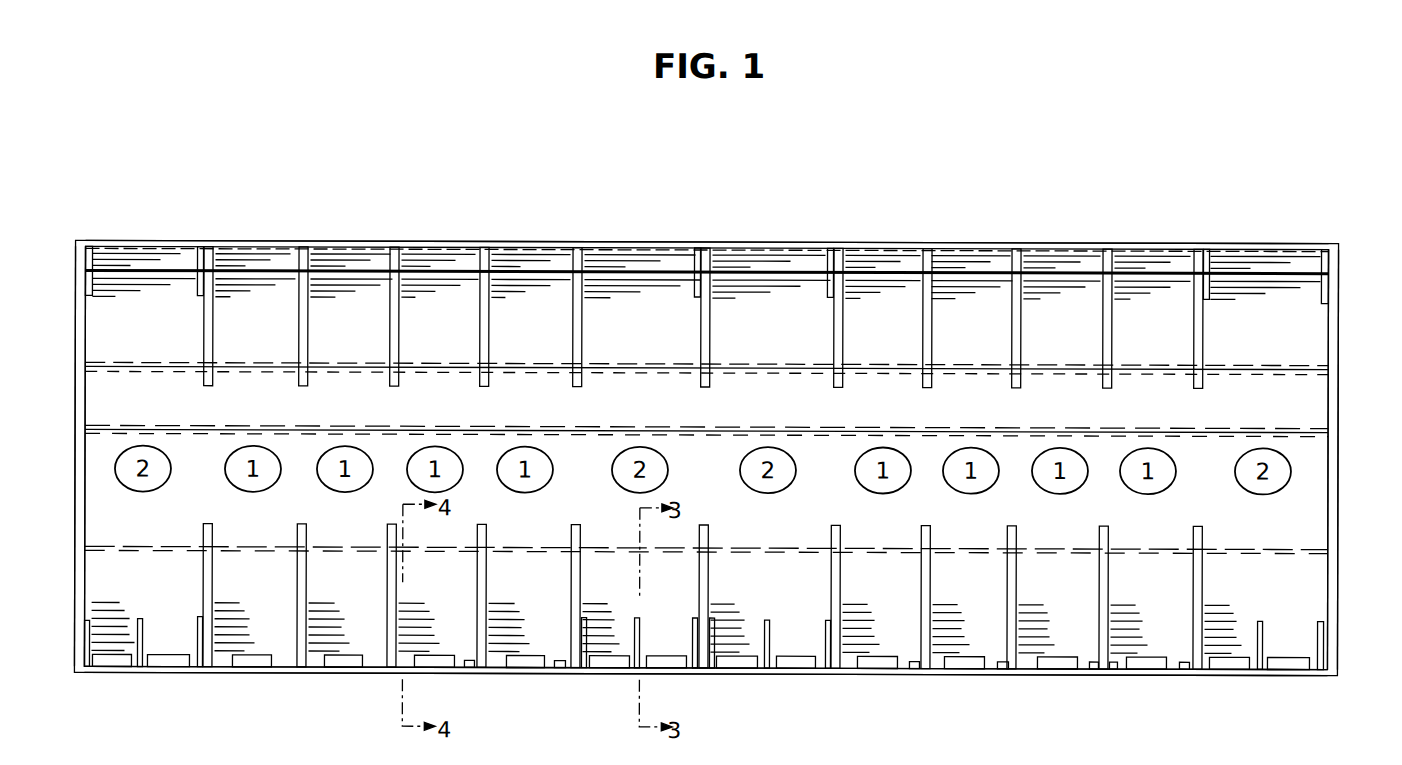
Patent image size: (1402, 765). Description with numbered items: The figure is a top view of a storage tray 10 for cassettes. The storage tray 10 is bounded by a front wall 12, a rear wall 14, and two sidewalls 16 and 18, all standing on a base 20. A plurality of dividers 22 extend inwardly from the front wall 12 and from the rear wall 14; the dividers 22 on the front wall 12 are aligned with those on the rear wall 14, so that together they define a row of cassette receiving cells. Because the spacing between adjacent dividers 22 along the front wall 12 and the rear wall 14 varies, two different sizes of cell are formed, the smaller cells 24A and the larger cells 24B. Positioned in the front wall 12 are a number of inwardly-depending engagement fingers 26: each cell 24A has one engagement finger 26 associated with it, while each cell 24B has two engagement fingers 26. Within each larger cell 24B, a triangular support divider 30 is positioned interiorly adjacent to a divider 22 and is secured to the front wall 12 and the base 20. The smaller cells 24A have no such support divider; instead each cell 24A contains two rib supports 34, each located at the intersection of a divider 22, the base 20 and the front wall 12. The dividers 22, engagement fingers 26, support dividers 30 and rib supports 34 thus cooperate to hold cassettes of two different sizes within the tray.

The storage tray 10 is at (706, 168).
The front wall 12 is at (815, 674).
The rear wall 14 is at (792, 240).
The sidewall 16 is at (75, 450).
The sidewall 18 is at (1338, 436).
The base 20 is at (1288, 378).
The dividers 22 is at (490, 300).
The cassette receiving cell 24A is at (335, 315).
The cassette receiving cell 24B is at (630, 290).
The engagement fingers 26 is at (116, 668).
The support divider 30 is at (584, 668).
The rib support 34 is at (1113, 668).